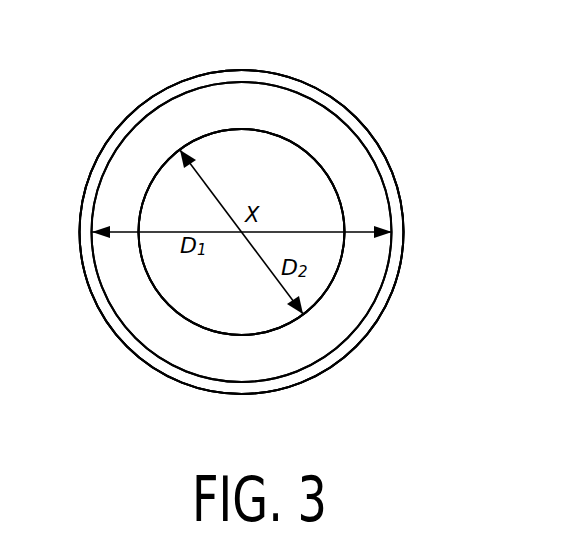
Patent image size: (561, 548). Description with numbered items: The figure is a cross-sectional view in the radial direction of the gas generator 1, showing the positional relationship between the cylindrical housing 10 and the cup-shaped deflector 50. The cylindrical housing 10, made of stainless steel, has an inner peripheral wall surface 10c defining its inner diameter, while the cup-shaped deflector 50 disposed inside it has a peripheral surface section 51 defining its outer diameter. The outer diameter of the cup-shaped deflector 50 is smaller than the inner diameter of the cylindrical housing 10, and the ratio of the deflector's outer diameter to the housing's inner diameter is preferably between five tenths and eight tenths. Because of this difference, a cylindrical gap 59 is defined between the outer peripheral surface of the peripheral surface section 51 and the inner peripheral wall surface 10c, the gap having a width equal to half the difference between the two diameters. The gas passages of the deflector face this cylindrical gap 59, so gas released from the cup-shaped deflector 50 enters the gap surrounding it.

The gas generator 1 is at (316, 62).
The cylindrical housing 10 is at (367, 131).
The inner peripheral wall surface 10c is at (385, 172).
The cup-shaped deflector 50 is at (199, 350).
The peripheral surface section 51 is at (330, 290).
The cylindrical gap 59 is at (148, 322).